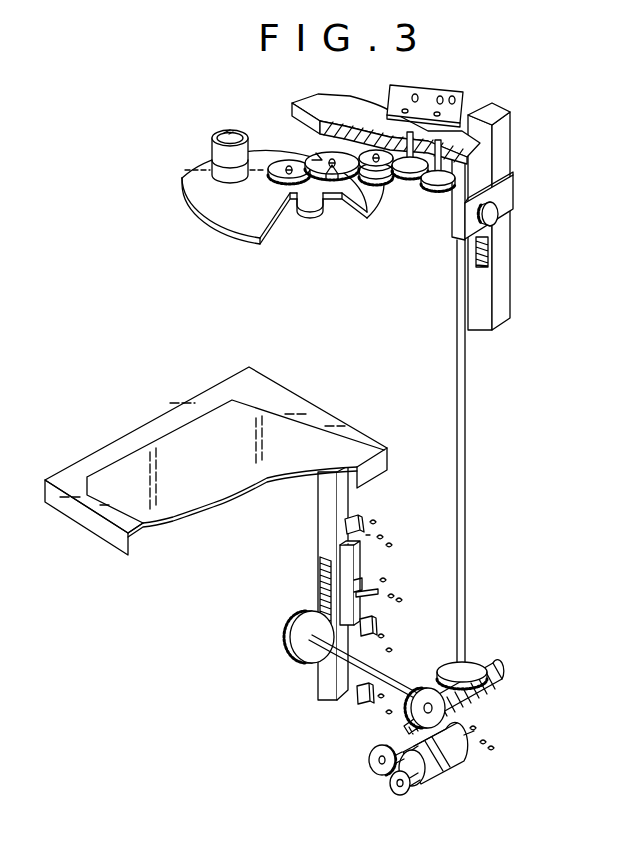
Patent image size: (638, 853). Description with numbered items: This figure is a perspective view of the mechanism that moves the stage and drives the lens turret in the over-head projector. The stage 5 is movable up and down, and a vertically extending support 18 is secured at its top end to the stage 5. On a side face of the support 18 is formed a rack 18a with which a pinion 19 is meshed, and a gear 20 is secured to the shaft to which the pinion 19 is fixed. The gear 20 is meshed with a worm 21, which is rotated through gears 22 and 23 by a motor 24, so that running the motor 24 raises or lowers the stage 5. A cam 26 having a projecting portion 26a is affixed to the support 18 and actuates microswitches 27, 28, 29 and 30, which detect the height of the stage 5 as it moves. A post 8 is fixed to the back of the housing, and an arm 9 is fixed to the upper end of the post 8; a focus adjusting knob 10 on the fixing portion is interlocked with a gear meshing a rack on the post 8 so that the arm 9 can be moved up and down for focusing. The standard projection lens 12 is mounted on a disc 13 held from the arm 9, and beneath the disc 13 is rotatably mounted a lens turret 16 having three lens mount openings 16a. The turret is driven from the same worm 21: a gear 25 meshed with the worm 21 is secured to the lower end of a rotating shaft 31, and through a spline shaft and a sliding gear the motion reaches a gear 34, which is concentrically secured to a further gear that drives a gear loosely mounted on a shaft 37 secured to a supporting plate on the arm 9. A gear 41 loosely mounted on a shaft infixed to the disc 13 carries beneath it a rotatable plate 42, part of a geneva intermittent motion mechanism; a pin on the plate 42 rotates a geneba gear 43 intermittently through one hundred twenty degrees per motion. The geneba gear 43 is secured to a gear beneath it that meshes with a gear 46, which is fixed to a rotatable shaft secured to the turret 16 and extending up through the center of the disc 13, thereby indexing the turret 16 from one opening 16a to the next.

The stage 5 is at (168, 420).
The post 8 is at (505, 300).
The arm 9 is at (333, 104).
The focus adjusting knob 10 is at (496, 213).
The standard projection lens 12 is at (212, 160).
The disc 13 is at (222, 206).
The lens turret 16 is at (273, 233).
The lens mount openings 16a is at (318, 220).
The support 18 is at (317, 498).
The rack 18a is at (320, 588).
The pinion 19 is at (292, 640).
The gear 20 is at (423, 695).
The worm 21 is at (481, 705).
The gear 22 is at (370, 762).
The gear 23 is at (398, 792).
The motor 24 is at (452, 775).
The gear 25 is at (480, 666).
The cam 26 is at (342, 560).
The projecting portion 26a is at (358, 590).
The microswitch 27 is at (358, 522).
The microswitch 28 is at (378, 594).
The microswitch 29 is at (368, 640).
The microswitch 30 is at (360, 697).
The rotating shaft 31 is at (468, 480).
The gear 34 is at (441, 190).
The shaft 37 is at (408, 176).
The gear 41 is at (368, 118).
The rotatable plate 42 is at (383, 182).
The geneba gear 43 is at (268, 160).
The gear 46 is at (272, 163).